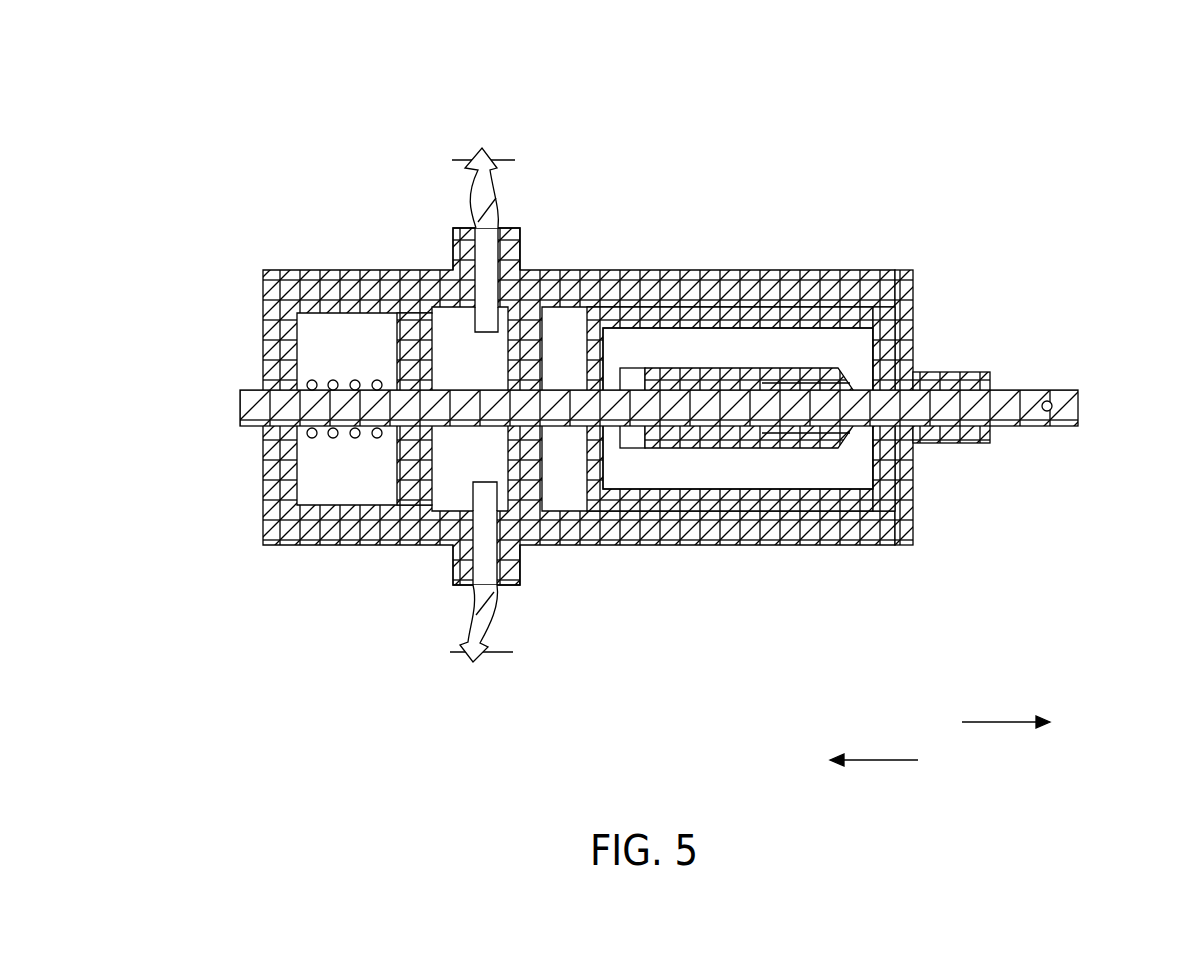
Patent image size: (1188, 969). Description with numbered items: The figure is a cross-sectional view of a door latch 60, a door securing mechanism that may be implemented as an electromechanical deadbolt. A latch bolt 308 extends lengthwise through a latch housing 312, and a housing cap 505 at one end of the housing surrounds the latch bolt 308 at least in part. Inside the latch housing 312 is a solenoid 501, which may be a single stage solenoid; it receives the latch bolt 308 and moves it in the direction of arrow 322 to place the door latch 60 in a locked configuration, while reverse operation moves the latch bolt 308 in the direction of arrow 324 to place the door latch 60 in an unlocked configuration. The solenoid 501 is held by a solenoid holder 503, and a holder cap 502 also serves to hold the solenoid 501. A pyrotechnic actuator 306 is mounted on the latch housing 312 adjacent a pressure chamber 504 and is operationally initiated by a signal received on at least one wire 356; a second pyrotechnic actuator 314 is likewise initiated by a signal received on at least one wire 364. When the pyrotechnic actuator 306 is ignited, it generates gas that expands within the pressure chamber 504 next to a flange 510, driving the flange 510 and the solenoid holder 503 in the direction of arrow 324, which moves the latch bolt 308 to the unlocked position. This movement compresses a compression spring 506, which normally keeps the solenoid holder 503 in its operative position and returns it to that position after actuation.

The door latch 60 is at (668, 368).
The pyrotechnic actuator 306 is at (502, 258).
The latch bolt 308 is at (1078, 407).
The latch housing 312 is at (717, 270).
The pyrotechnic actuator 314 is at (455, 584).
The arrow 322 is at (987, 722).
The arrow 324 is at (893, 761).
The at least one wire 356 is at (498, 196).
The at least one wire 364 is at (497, 617).
The solenoid 501 is at (815, 476).
The holder cap 502 is at (883, 455).
The solenoid holder 503 is at (677, 505).
The pressure chamber 504 is at (490, 467).
The housing cap 505 is at (905, 330).
The compression spring 506 is at (354, 381).
The flange 510 is at (407, 473).